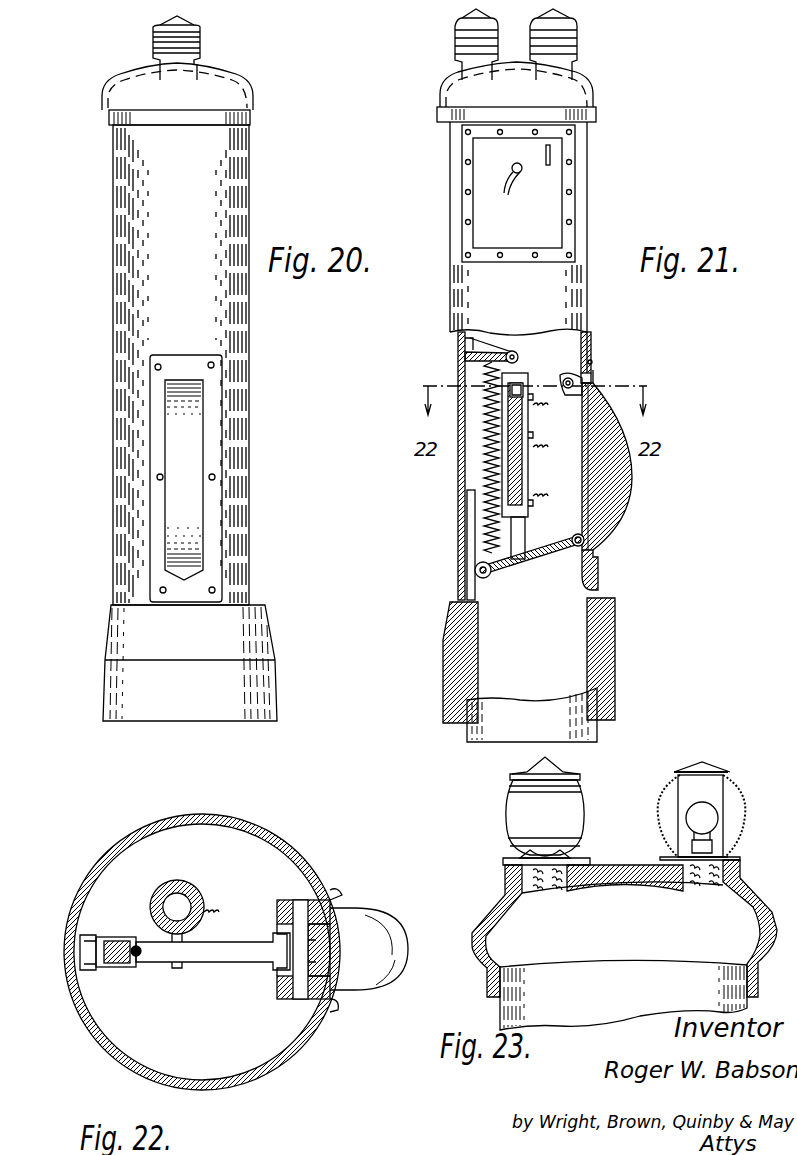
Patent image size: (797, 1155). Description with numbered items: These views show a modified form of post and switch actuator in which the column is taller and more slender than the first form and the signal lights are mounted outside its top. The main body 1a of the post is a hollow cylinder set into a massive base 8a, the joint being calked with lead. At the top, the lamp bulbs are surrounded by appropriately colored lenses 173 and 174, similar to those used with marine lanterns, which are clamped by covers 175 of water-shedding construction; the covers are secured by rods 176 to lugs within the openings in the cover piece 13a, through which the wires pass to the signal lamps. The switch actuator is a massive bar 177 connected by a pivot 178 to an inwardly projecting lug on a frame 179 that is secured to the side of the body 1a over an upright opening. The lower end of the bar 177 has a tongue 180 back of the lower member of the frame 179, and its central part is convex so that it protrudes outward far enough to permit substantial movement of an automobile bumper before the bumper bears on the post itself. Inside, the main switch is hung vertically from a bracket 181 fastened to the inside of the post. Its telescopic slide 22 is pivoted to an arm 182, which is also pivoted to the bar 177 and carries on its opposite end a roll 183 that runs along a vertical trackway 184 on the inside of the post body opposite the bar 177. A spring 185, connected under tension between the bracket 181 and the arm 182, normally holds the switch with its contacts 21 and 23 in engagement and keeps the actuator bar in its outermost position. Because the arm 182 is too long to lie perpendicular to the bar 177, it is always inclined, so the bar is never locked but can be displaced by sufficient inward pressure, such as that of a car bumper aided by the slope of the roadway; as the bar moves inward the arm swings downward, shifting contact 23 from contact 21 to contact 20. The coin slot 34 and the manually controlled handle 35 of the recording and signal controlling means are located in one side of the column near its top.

In FIG. 20, the main body 1a is at (128, 242).
In FIG. 22, the main body 1a is at (300, 847).
In FIG. 23, the main body 1a is at (503, 1005).
In FIG. 20, the base 8a is at (232, 678).
In FIG. 21, the base 8a is at (612, 668).
In FIG. 20, the cover piece 13a is at (237, 81).
In FIG. 21, the cover piece 13a is at (585, 86).
In FIG. 23, the cover piece 13a is at (478, 941).
In FIG. 21, the switch contact 20 is at (540, 450).
In FIG. 21, the switch contact 21 is at (521, 385).
In FIG. 21, the telescopic slide 22 is at (525, 553).
In FIG. 21, the switch contact 23 is at (517, 352).
In FIG. 22, the switch contact 23 is at (179, 896).
In FIG. 21, the coin slot 34 is at (548, 169).
In FIG. 21, the manually controlled handle 35 is at (512, 169).
In FIG. 21, the lens 173 is at (458, 41).
In FIG. 23, the lens 173 is at (503, 811).
In FIG. 20, the lens 174 is at (200, 35).
In FIG. 21, the lens 174 is at (577, 39).
In FIG. 23, the lens 174 is at (740, 819).
In FIG. 20, the cover 175 is at (166, 21).
In FIG. 21, the cover 175 is at (470, 11).
In FIG. 23, the cover 175 is at (560, 767).
In FIG. 23, the rod 176 is at (520, 859).
In FIG. 20, the actuator bar 177 is at (178, 441).
In FIG. 21, the actuator bar 177 is at (615, 491).
In FIG. 22, the actuator bar 177 is at (372, 926).
In FIG. 21, the pivot 178 is at (590, 361).
In FIG. 22, the pivot 178 is at (290, 900).
In FIG. 20, the frame 179 is at (165, 520).
In FIG. 21, the frame 179 is at (575, 383).
In FIG. 22, the frame 179 is at (338, 890).
In FIG. 21, the tongue 180 is at (598, 577).
In FIG. 21, the bracket 181 is at (460, 351).
In FIG. 21, the arm 182 is at (528, 581).
In FIG. 22, the arm 182 is at (236, 962).
In FIG. 21, the roll 183 is at (477, 573).
In FIG. 22, the roll 183 is at (135, 960).
In FIG. 21, the trackway 184 is at (470, 521).
In FIG. 22, the trackway 184 is at (80, 940).
In FIG. 21, the spring 185 is at (490, 456).
In FIG. 22, the spring 185 is at (121, 940).